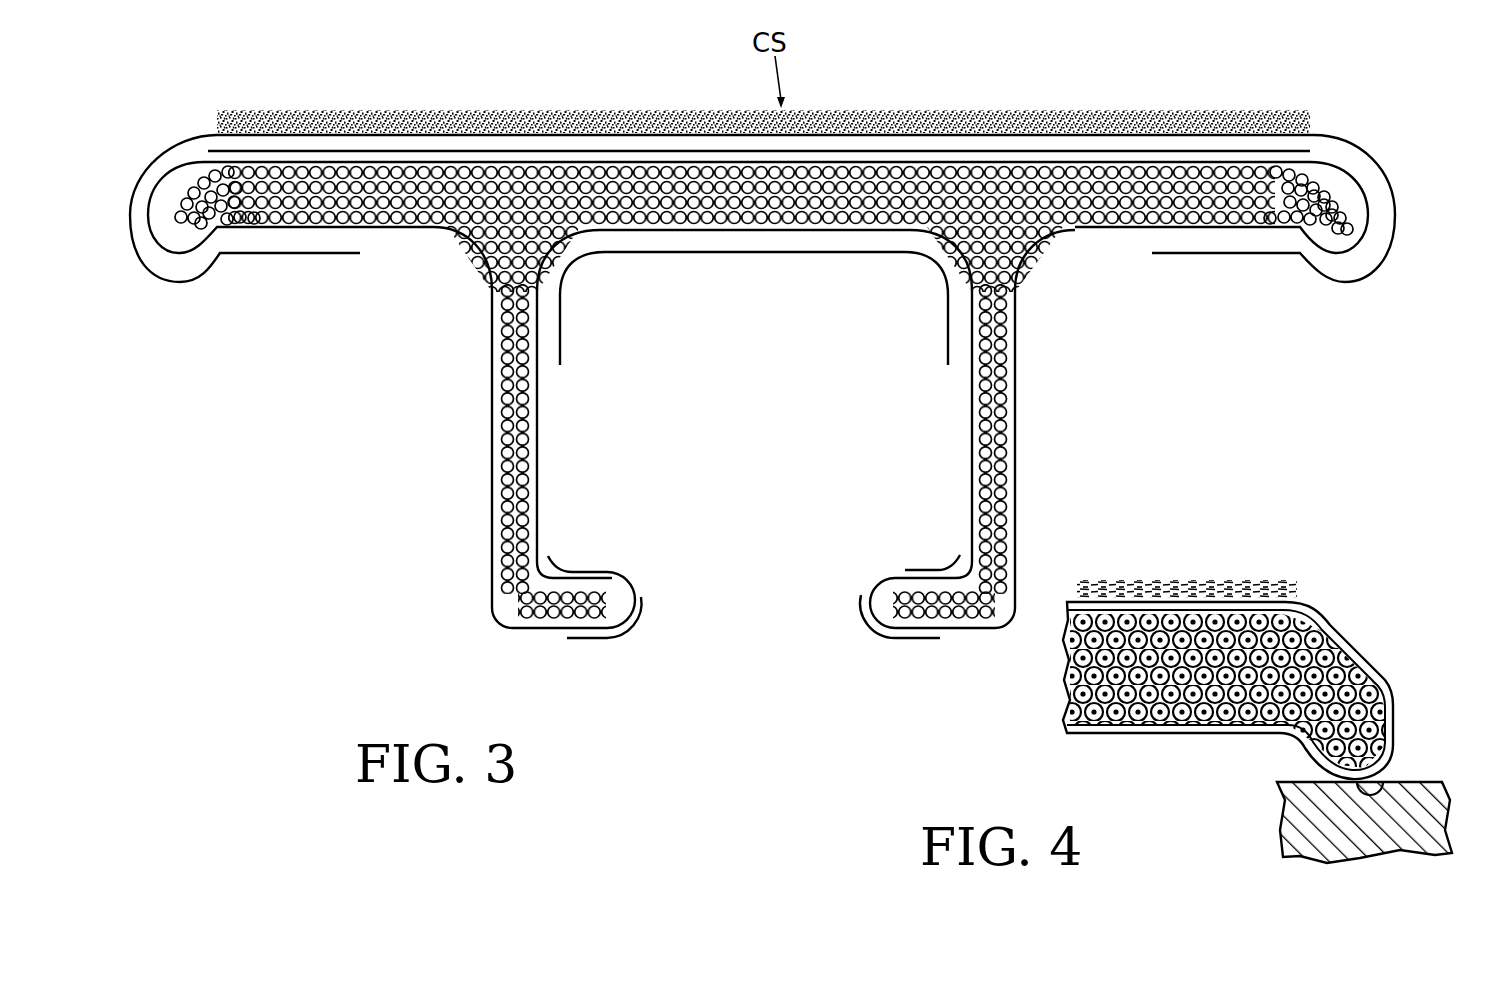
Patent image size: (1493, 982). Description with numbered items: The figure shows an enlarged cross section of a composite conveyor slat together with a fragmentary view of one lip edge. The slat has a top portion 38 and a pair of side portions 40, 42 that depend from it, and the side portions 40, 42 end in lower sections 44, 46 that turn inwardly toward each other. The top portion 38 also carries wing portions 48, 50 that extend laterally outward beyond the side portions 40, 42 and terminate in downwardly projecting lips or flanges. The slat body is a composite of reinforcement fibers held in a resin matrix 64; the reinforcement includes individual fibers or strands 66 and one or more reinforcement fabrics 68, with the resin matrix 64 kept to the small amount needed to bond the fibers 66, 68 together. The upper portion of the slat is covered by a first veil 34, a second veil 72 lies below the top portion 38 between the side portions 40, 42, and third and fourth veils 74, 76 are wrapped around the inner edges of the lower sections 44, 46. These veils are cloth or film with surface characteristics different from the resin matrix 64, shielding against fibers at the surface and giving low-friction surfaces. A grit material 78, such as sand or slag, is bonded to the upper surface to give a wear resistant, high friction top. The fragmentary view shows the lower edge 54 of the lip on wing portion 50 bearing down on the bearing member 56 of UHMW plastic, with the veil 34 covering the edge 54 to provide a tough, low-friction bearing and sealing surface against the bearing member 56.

In FIG. 3, the first veil 34 is at (1370, 162).
In FIG. 4, the first veil 34 is at (1397, 723).
In FIG. 3, the top portion 38 is at (712, 165).
In FIG. 3, the side portion 40 is at (490, 440).
In FIG. 3, the side portion 42 is at (1017, 440).
In FIG. 3, the lower section 44 is at (613, 600).
In FIG. 3, the lower section 46 is at (885, 598).
In FIG. 3, the wing portion 48 is at (297, 178).
In FIG. 3, the wing portion 50 is at (1142, 172).
In FIG. 4, the wing portion 50 is at (1210, 615).
In FIG. 4, the lower edge 54 is at (1367, 782).
In FIG. 4, the bearing member 56 is at (1303, 818).
In FIG. 3, the resin matrix 64 is at (493, 305).
In FIG. 3, the reinforcement fibers 66 is at (1008, 318).
In FIG. 4, the reinforcement fibers 66 is at (1318, 635).
In FIG. 3, the reinforcement fabric 68 is at (892, 150).
In FIG. 3, the second veil 72 is at (750, 253).
In FIG. 3, the third veil 74 is at (640, 620).
In FIG. 3, the fourth veil 76 is at (866, 614).
In FIG. 3, the grit material 78 is at (432, 115).